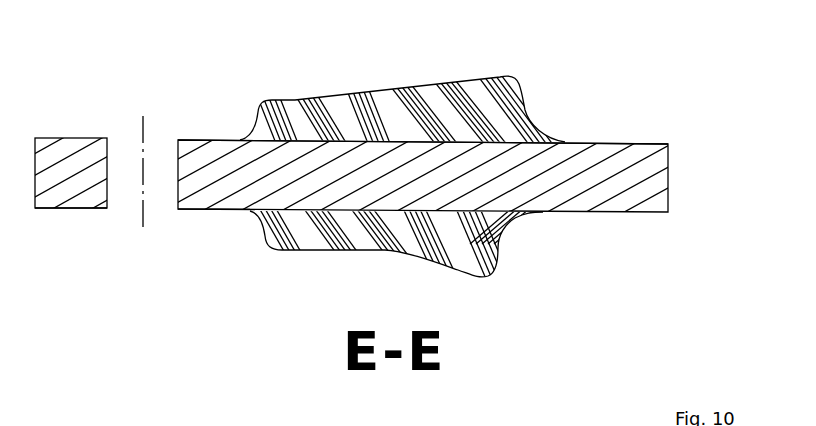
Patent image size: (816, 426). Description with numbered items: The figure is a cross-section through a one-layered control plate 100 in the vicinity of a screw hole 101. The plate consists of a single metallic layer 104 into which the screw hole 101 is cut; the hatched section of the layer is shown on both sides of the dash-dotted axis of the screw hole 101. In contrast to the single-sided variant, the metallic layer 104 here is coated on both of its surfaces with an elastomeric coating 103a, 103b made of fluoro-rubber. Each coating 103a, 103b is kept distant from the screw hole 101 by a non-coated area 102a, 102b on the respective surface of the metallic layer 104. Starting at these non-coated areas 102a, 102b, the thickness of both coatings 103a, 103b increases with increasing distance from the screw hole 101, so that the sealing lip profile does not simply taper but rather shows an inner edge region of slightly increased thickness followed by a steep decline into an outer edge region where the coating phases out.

The control plate 100 is at (655, 212).
The screw hole 101 is at (131, 120).
The non-coated area 102a is at (67, 148).
The non-coated area 102b is at (83, 195).
The elastomeric coating 103a is at (445, 87).
The elastomeric coating 103b is at (437, 222).
The metallic layer 104 is at (623, 143).